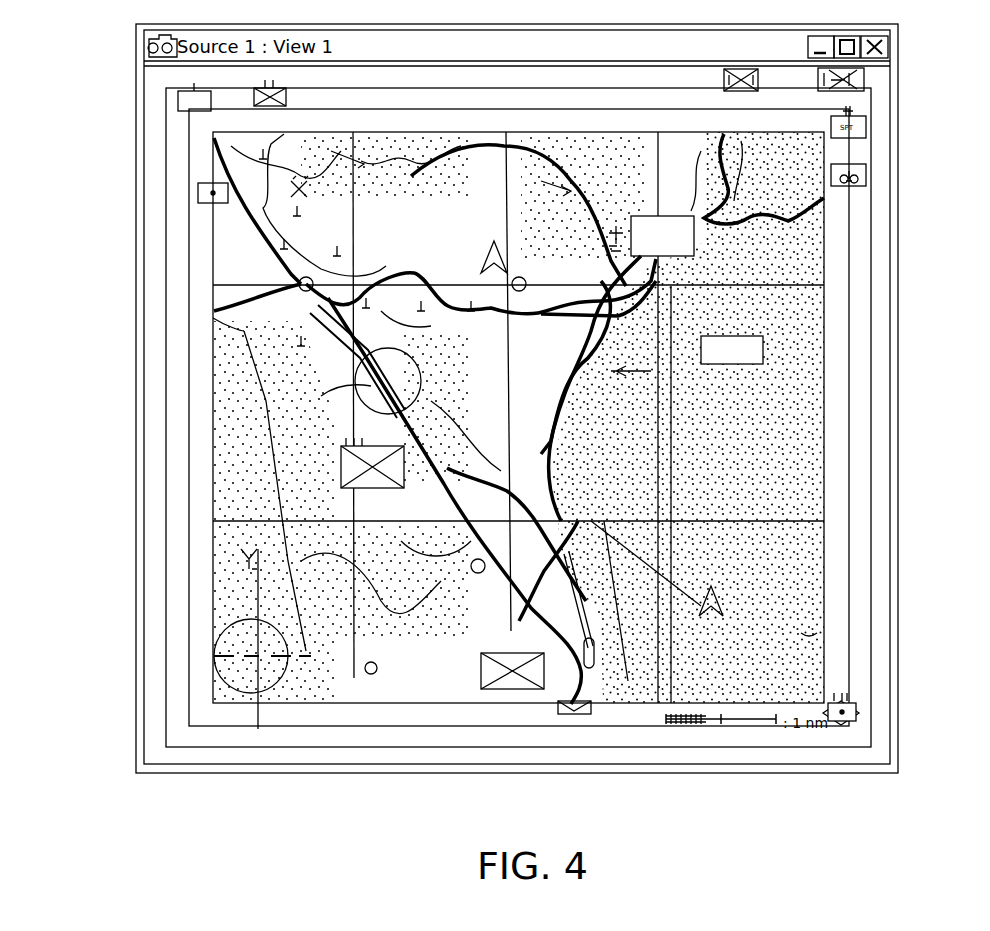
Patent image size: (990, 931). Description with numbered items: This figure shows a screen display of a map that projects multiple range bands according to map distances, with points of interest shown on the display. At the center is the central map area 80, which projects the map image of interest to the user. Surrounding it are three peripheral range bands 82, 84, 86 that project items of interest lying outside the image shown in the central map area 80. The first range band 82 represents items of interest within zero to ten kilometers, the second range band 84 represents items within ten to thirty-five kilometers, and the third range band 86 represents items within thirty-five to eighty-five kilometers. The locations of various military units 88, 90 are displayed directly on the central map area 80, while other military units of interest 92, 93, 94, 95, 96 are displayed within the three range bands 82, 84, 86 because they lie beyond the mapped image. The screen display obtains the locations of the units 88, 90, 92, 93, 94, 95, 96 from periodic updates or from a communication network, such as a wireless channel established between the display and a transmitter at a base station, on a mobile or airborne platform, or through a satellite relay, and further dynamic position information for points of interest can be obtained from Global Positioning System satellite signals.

The central map area 80 is at (785, 467).
The first range band 82 is at (840, 228).
The second range band 84 is at (866, 268).
The third range band 86 is at (880, 322).
The military unit 88 is at (340, 466).
The military unit 90 is at (480, 672).
The military unit of interest 92 is at (572, 715).
The military unit of interest 93 is at (197, 192).
The military unit of interest 94 is at (177, 99).
The military unit of interest 95 is at (850, 79).
The military unit of interest 96 is at (872, 718).